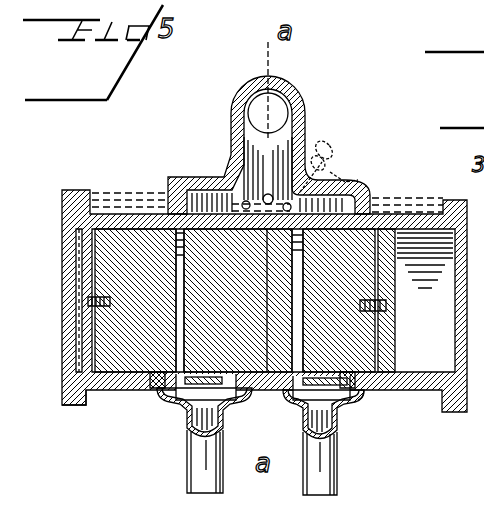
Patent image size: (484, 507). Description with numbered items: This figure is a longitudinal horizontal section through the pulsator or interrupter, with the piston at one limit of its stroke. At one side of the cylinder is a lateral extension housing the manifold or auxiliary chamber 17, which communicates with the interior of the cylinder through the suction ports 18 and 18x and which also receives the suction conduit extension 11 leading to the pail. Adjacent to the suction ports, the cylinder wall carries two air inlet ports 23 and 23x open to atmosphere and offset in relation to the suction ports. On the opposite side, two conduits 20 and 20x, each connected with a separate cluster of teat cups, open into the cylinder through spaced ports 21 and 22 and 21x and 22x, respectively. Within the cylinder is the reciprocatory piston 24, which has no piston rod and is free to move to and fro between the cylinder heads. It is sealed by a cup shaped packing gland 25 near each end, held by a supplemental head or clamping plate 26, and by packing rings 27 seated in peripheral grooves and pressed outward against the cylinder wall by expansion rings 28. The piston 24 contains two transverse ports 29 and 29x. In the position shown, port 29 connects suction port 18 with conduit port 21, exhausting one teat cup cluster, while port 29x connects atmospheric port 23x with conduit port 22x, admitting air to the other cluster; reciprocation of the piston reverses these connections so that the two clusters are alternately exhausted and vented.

The suction conduit extension 11 is at (280, 110).
The manifold or auxiliary chamber 17 is at (343, 178).
The suction port 18 is at (163, 207).
The suction port 18x is at (375, 208).
The conduit 20 is at (186, 467).
The conduit 20x is at (340, 461).
The port 21 is at (158, 390).
The port 21x is at (295, 406).
The port 22 is at (282, 384).
The port 22x is at (363, 393).
The air inlet port 23 is at (210, 178).
The air inlet port 23x is at (367, 197).
The reciprocatory piston 24 is at (87, 412).
The cup shaped packing gland 25 is at (74, 368).
The supplemental head or clamping plate 26 is at (74, 320).
The packing ring 27 is at (150, 228).
The expansion ring 28 is at (140, 213).
The transverse port 29 is at (100, 412).
The transverse port 29x is at (352, 410).